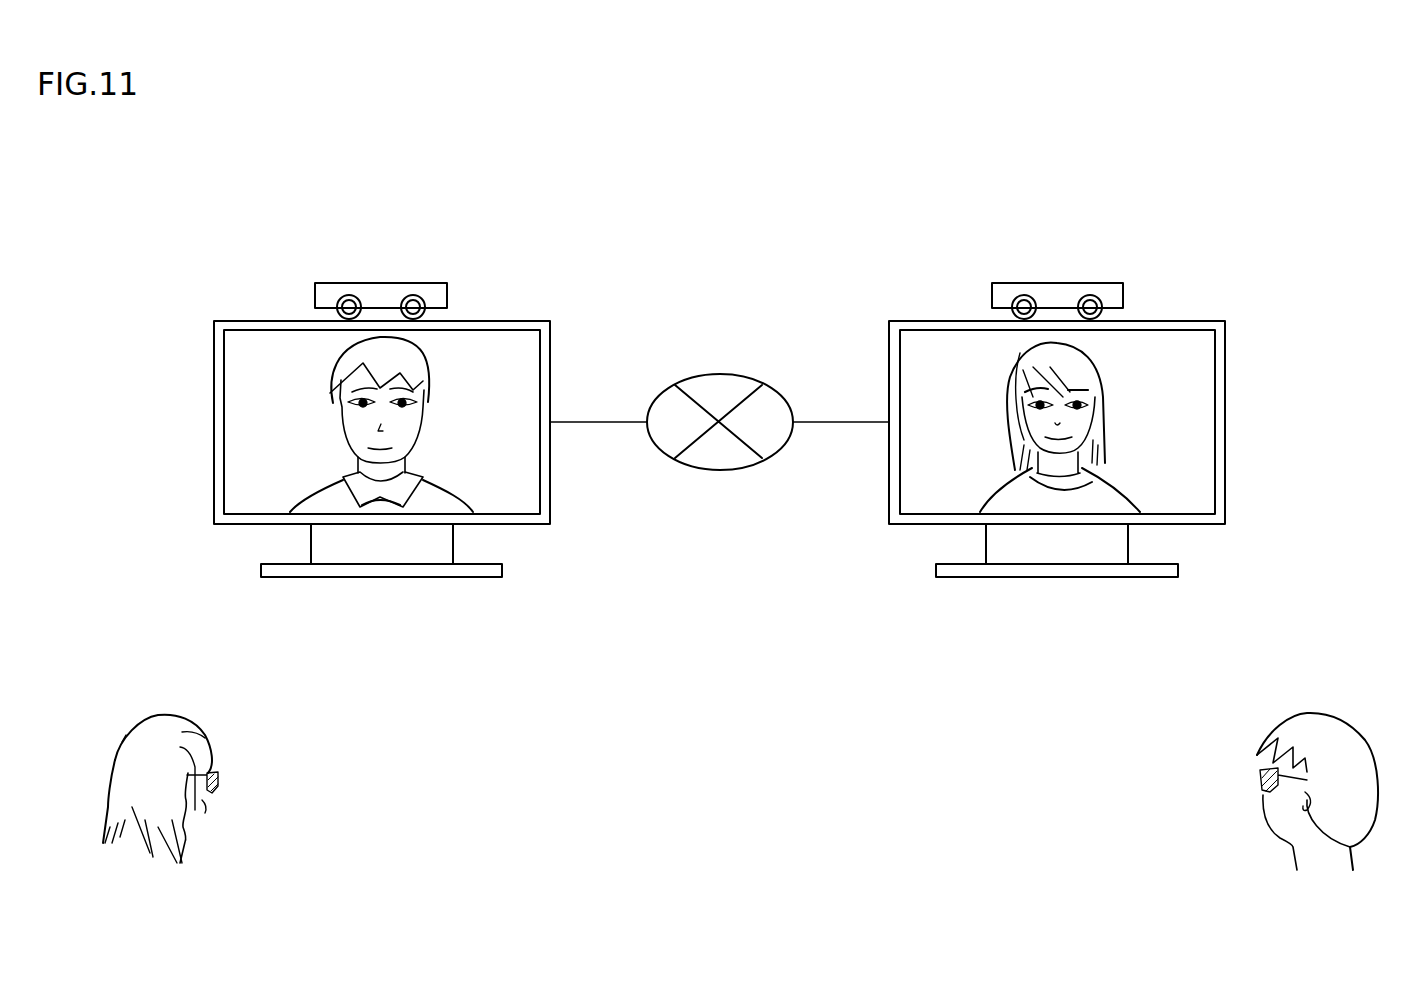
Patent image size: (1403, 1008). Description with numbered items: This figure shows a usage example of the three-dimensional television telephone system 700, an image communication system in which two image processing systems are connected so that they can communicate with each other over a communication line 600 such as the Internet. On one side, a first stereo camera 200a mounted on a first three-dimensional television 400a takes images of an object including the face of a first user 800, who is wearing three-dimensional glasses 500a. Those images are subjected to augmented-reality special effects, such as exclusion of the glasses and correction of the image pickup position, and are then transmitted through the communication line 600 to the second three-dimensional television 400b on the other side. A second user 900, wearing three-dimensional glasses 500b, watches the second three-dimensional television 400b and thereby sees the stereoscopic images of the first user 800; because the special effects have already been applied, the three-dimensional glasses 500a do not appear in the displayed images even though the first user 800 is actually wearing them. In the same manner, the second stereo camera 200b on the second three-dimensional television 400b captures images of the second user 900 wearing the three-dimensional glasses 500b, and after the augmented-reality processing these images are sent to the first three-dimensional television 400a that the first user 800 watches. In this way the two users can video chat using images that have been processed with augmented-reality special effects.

The first stereo camera 200a is at (383, 283).
The second stereo camera 200b is at (1058, 283).
The first 3D television 400a is at (498, 320).
The second 3D television 400b is at (1173, 320).
The 3D glasses 500a is at (220, 775).
The 3D glasses 500b is at (1260, 768).
The communication line 600 is at (718, 374).
The 3D television telephone system 700 is at (740, 579).
The first user 800 is at (210, 757).
The second user 900 is at (1275, 763).